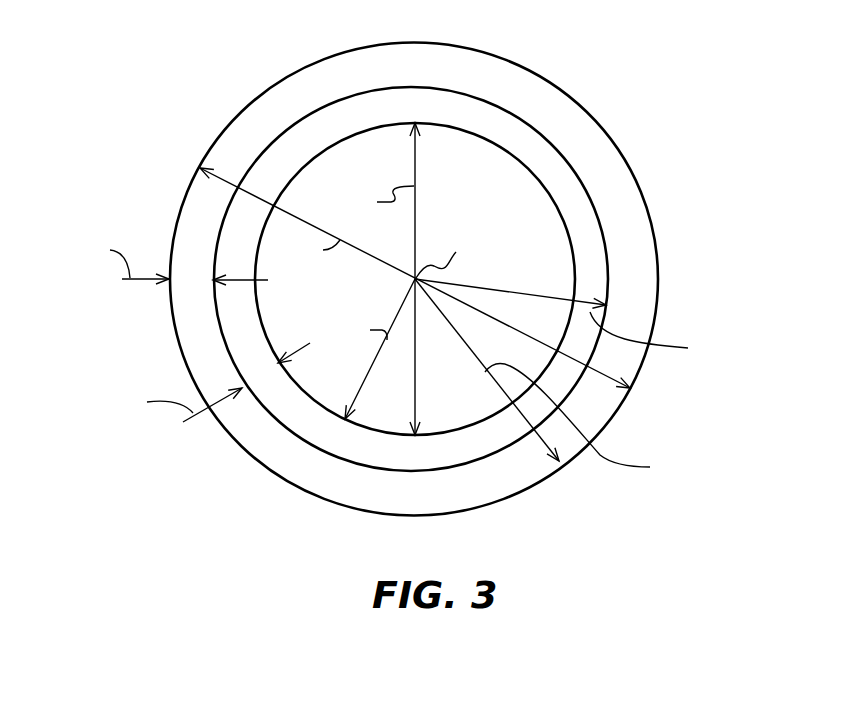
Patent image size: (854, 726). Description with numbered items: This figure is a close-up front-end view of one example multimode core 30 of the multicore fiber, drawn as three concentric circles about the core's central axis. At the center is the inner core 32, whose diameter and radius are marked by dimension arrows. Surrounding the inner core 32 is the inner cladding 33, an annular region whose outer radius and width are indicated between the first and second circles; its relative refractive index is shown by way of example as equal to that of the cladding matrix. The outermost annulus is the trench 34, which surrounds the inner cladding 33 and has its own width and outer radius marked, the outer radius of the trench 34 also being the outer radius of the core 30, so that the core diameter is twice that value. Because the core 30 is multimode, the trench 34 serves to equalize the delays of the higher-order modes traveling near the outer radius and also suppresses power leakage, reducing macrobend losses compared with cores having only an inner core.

The core 30 is at (204, 86).
The inner core 32 is at (550, 276).
The inner cladding 33 is at (542, 153).
The trench 34 is at (650, 289).